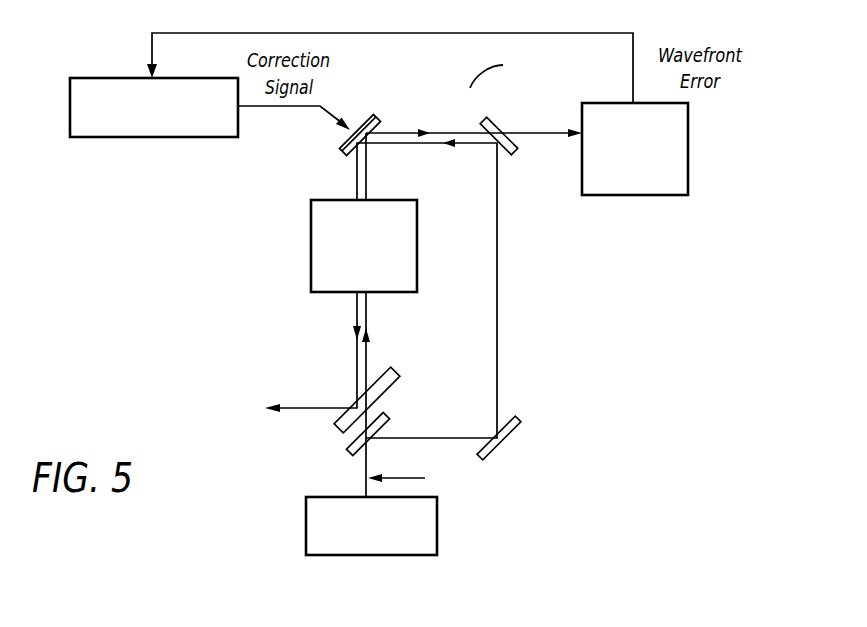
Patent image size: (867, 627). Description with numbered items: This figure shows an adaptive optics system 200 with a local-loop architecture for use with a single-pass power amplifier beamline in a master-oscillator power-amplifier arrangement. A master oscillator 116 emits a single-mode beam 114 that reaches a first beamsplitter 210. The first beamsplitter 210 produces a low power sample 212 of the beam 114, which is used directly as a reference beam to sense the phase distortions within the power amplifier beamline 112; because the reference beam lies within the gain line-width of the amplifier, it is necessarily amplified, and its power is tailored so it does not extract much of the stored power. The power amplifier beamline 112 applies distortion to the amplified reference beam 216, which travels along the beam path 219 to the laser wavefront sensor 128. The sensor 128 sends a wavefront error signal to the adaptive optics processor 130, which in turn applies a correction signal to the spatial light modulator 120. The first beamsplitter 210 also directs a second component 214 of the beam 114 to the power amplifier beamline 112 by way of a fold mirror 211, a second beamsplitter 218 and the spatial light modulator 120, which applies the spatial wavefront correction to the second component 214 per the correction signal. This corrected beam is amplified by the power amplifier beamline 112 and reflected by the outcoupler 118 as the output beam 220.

The laser system 200 is at (150, 290).
The adaptive optics processor 130 is at (93, 77).
The spatial light modulator 120 is at (381, 119).
The second beamsplitter 218 is at (515, 150).
The laser wavefront sensor 128 is at (688, 148).
The beam to wavefront sensor 219 is at (547, 133).
The second component 214 is at (357, 178).
The amplified reference beam 216 is at (368, 172).
The power amplifier beamline 112 is at (311, 243).
The output beam 220 is at (320, 407).
The low power sample 212 is at (372, 365).
The outcoupler 118 is at (337, 427).
The first beamsplitter 210 is at (354, 458).
The fold mirror 211 is at (520, 427).
The master oscillator 116 is at (306, 525).
The master oscillator beam 114 is at (437, 497).